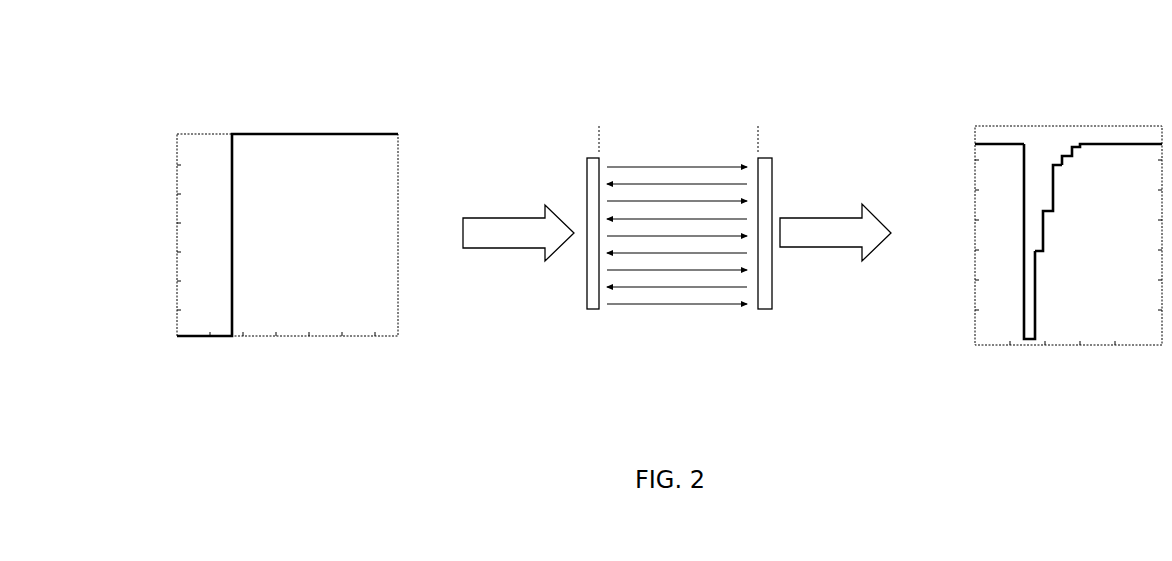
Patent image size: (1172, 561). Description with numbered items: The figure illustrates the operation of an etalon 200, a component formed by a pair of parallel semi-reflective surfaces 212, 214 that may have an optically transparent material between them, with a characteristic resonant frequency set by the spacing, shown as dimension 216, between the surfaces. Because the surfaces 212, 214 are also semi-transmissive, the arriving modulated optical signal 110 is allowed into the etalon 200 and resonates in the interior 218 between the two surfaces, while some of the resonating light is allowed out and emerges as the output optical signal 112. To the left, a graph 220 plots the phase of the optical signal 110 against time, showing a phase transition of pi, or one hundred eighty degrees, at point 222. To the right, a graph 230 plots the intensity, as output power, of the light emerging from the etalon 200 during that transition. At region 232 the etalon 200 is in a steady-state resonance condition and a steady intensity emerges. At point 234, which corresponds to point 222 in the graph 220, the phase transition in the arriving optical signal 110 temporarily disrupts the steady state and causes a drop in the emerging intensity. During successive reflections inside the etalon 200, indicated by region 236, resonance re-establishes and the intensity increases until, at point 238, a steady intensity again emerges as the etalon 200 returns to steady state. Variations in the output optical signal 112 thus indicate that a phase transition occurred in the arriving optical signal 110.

The etalon 200 is at (732, 64).
The arriving modulated optical signal 110 is at (500, 216).
The output optical signal 112 is at (813, 217).
The semi-reflective surface 212 is at (582, 185).
The semi-reflective surface 214 is at (776, 186).
The dimension 216 is at (756, 135).
The interior 218 is at (680, 316).
The graph 220 is at (322, 96).
The point 222 is at (231, 126).
The graph 230 is at (1058, 84).
The region 232 is at (993, 135).
The point 234 is at (1027, 162).
The region 236 is at (1045, 238).
The point 238 is at (1122, 150).